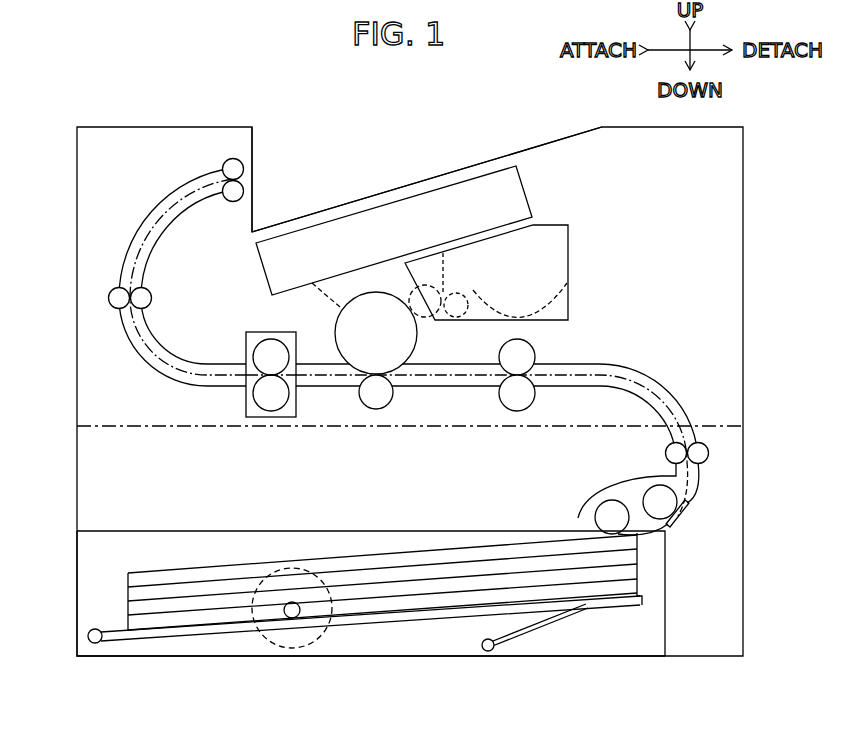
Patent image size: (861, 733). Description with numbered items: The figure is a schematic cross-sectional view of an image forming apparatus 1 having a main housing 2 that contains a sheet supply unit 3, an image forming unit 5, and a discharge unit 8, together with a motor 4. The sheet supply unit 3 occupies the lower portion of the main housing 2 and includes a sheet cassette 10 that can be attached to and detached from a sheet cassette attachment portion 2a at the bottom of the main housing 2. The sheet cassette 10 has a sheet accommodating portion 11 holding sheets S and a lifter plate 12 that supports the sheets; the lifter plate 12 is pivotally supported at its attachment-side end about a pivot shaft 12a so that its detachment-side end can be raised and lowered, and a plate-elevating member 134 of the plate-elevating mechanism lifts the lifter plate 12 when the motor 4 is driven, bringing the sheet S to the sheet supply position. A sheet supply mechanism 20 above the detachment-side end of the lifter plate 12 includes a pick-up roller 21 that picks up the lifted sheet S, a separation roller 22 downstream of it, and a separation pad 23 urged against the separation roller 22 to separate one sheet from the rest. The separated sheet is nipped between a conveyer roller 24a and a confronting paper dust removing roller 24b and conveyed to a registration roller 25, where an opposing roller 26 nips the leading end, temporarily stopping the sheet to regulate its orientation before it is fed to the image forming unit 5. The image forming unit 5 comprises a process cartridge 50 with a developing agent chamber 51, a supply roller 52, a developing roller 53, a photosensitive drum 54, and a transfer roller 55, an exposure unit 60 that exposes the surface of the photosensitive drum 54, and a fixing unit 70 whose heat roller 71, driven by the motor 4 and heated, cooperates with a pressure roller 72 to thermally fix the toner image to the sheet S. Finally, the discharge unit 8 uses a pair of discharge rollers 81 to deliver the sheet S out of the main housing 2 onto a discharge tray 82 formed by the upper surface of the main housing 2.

The image forming apparatus 1 is at (389, 350).
The main housing 2 is at (77, 353).
The sheet cassette attachment portion 2a is at (200, 483).
The sheet supply unit 3 is at (337, 527).
The motor 4 is at (262, 643).
The image forming unit 5 is at (327, 408).
The discharge unit 8 is at (427, 170).
The sheet cassette 10 is at (341, 621).
The sheet accommodating portion 11 is at (148, 562).
The lifter plate 12 is at (448, 610).
The pivot shaft 12a is at (95, 644).
The plate-elevating member 134 is at (573, 612).
The sheet supply mechanism 20 is at (664, 497).
The pick-up roller 21 is at (596, 511).
The separation roller 22 is at (648, 490).
The separation pad 23 is at (679, 518).
The conveyer roller 24a is at (666, 453).
The paper dust removing roller 24b is at (709, 453).
The registration roller 25 is at (535, 394).
The opposing roller 26 is at (535, 353).
The process cartridge 50 is at (498, 291).
The developing agent chamber 51 is at (510, 279).
The supply roller 52 is at (455, 320).
The developing roller 53 is at (412, 293).
The photosensitive drum 54 is at (416, 342).
The transfer roller 55 is at (392, 396).
The exposure unit 60 is at (420, 233).
The fixing unit 70 is at (244, 355).
The heat roller 71 is at (270, 340).
The pressure roller 72 is at (254, 395).
The discharge roller 81 is at (243, 189).
The discharge tray 82 is at (352, 201).
The sheet S is at (188, 569).